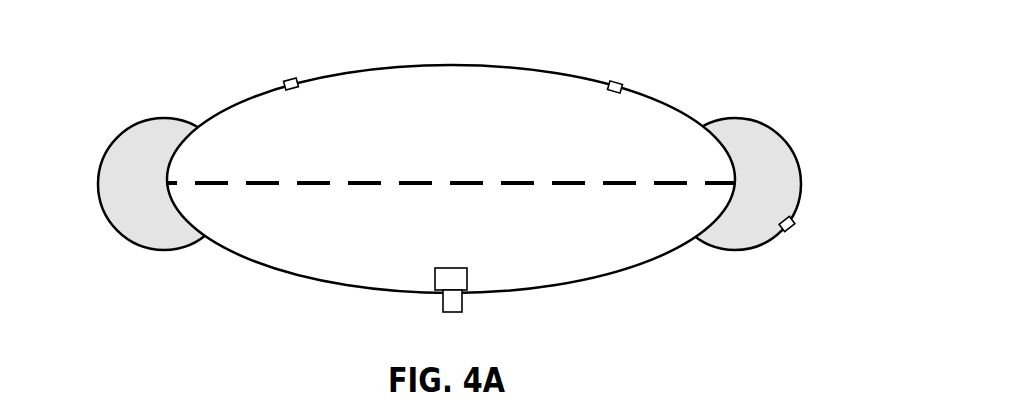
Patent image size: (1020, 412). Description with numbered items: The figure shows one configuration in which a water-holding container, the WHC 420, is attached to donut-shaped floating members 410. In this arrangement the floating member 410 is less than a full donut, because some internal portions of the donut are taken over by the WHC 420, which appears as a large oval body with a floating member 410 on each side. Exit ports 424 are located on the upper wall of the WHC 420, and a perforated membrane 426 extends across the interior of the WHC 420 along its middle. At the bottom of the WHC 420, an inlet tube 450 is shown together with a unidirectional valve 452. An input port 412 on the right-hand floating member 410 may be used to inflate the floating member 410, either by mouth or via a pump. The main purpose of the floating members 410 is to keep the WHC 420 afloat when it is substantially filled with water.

The floating member 410 is at (467, 164).
The input port 412 is at (809, 272).
The WHC 420 is at (451, 163).
The exit port 424 is at (455, 66).
The perforated membrane 426 is at (442, 163).
The inlet tube 450 is at (397, 323).
The unidirectional valve 452 is at (390, 265).